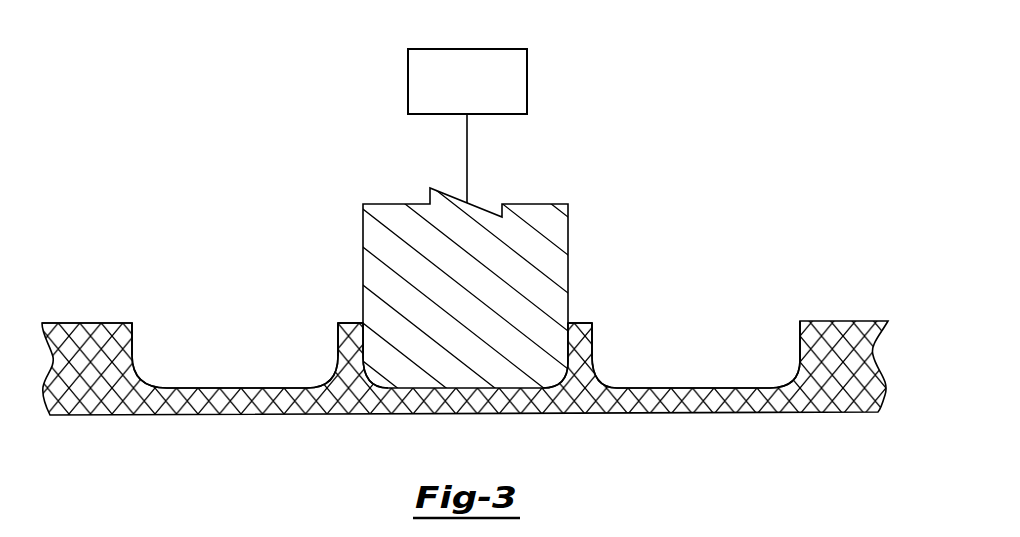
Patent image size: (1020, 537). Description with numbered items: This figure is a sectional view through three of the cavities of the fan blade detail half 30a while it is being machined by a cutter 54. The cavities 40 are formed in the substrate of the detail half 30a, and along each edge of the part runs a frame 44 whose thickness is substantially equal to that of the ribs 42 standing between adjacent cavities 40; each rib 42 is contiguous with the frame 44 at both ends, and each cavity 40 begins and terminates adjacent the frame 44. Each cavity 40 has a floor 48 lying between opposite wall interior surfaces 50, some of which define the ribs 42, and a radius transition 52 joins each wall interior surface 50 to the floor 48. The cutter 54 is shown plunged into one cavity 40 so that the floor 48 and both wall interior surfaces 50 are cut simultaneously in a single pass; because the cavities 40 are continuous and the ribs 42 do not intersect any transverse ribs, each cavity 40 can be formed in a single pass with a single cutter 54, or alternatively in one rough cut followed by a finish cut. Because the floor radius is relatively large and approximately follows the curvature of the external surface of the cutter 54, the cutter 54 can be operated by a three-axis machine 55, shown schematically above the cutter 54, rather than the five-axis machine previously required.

The detail half 30a is at (465, 272).
The cavity 40 is at (338, 366).
The rib 42 is at (340, 323).
The frame 44 is at (80, 327).
The floor 48 is at (237, 388).
The wall interior surface 50 is at (132, 327).
The radius transition 52 is at (143, 383).
The cutter 54 is at (363, 230).
The 3-axis machine 55 is at (528, 80).